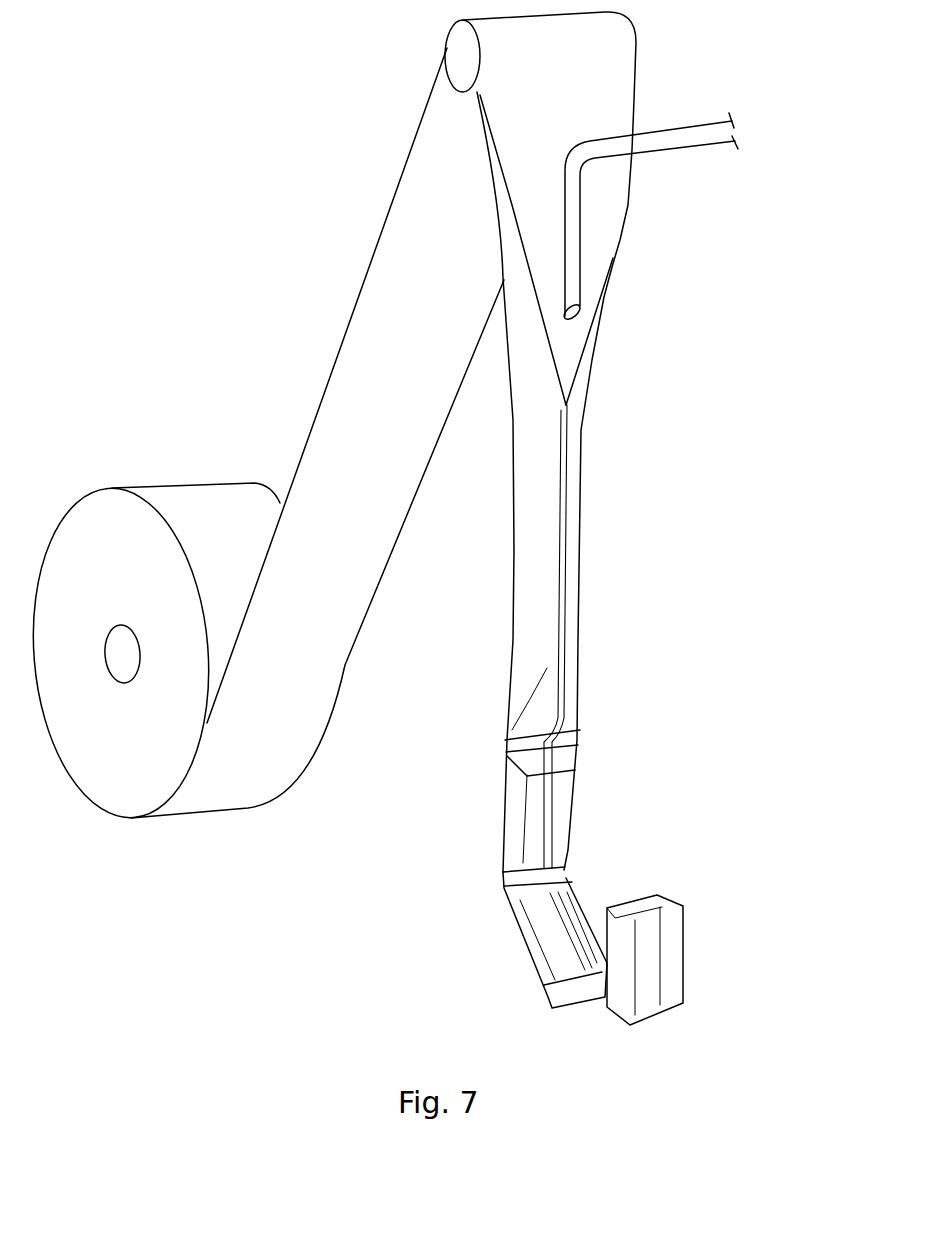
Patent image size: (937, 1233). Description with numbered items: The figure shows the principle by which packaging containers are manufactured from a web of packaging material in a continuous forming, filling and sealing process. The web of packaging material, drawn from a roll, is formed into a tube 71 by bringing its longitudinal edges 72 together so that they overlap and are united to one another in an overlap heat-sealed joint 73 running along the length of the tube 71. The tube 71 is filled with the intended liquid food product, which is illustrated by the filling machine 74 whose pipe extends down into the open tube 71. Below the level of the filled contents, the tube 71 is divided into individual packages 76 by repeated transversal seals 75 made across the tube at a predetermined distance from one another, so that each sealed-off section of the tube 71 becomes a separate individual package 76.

The tube 71 is at (538, 508).
The longitudinal edges 72 is at (537, 247).
The overlap heat-sealed joint 73 is at (563, 441).
The filling machine 74 is at (683, 137).
The transversal seals 75 is at (573, 755).
The individual packages 76 is at (677, 960).